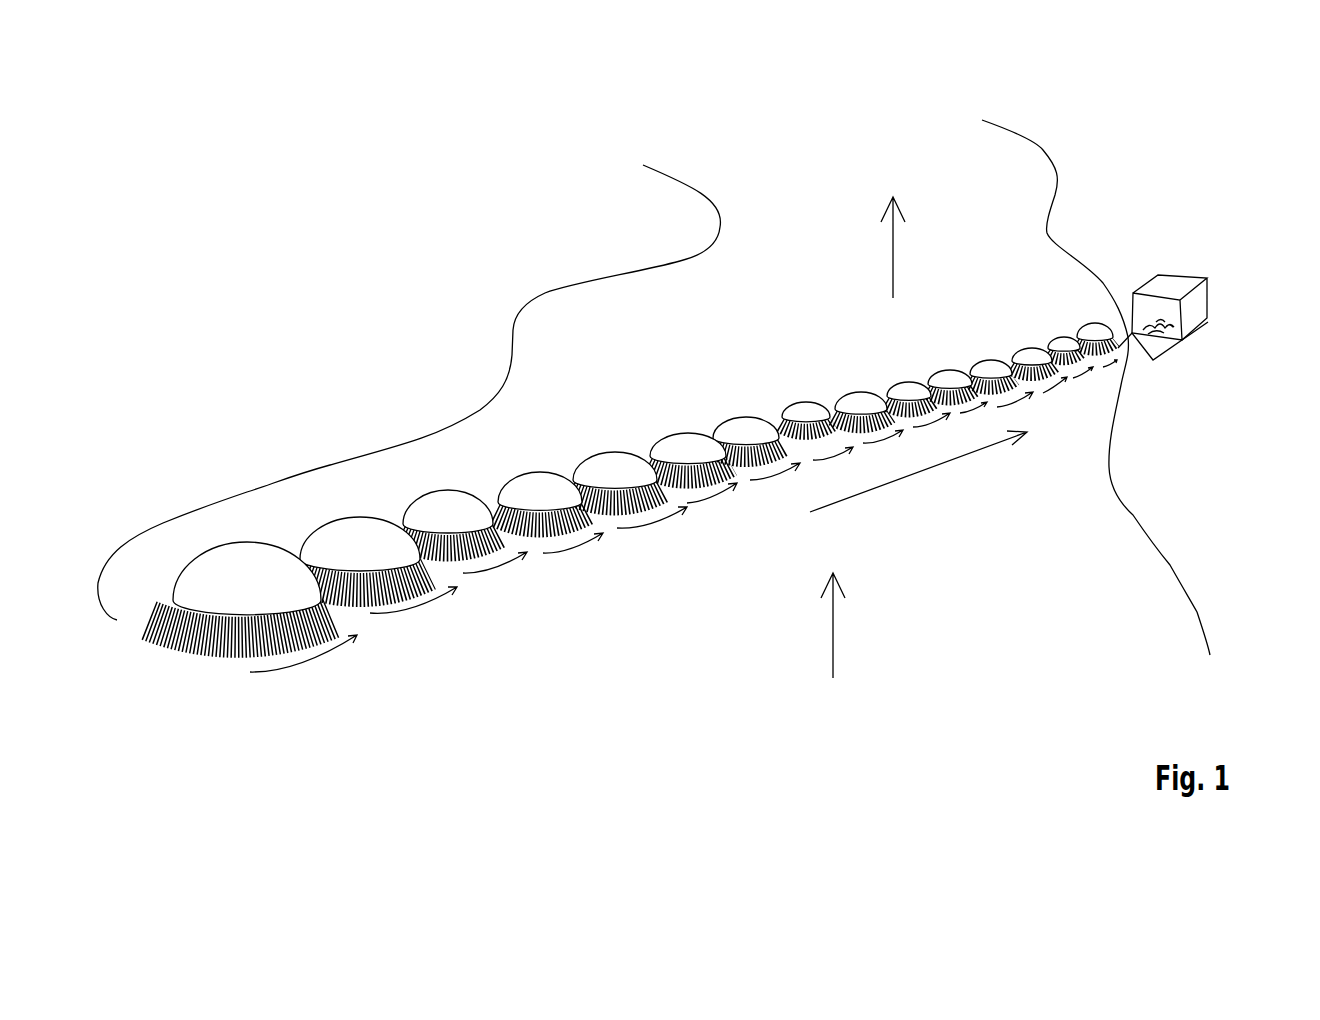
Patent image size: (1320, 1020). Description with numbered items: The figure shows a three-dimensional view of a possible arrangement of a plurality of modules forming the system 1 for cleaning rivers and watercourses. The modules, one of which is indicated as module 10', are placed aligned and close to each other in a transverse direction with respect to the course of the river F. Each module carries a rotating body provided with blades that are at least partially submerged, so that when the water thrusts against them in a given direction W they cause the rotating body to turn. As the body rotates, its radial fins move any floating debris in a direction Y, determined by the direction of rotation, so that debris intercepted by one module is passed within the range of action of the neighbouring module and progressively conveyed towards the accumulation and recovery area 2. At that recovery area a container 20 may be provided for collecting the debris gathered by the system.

The system 1 is at (1142, 201).
The accumulation and recovery area 2 is at (1164, 382).
The brush-like contact element 10' is at (248, 495).
The container / housing 20 is at (1196, 311).
The river F is at (707, 275).
The direction of water thrust W is at (875, 437).
The direction of debris movement Y is at (918, 471).